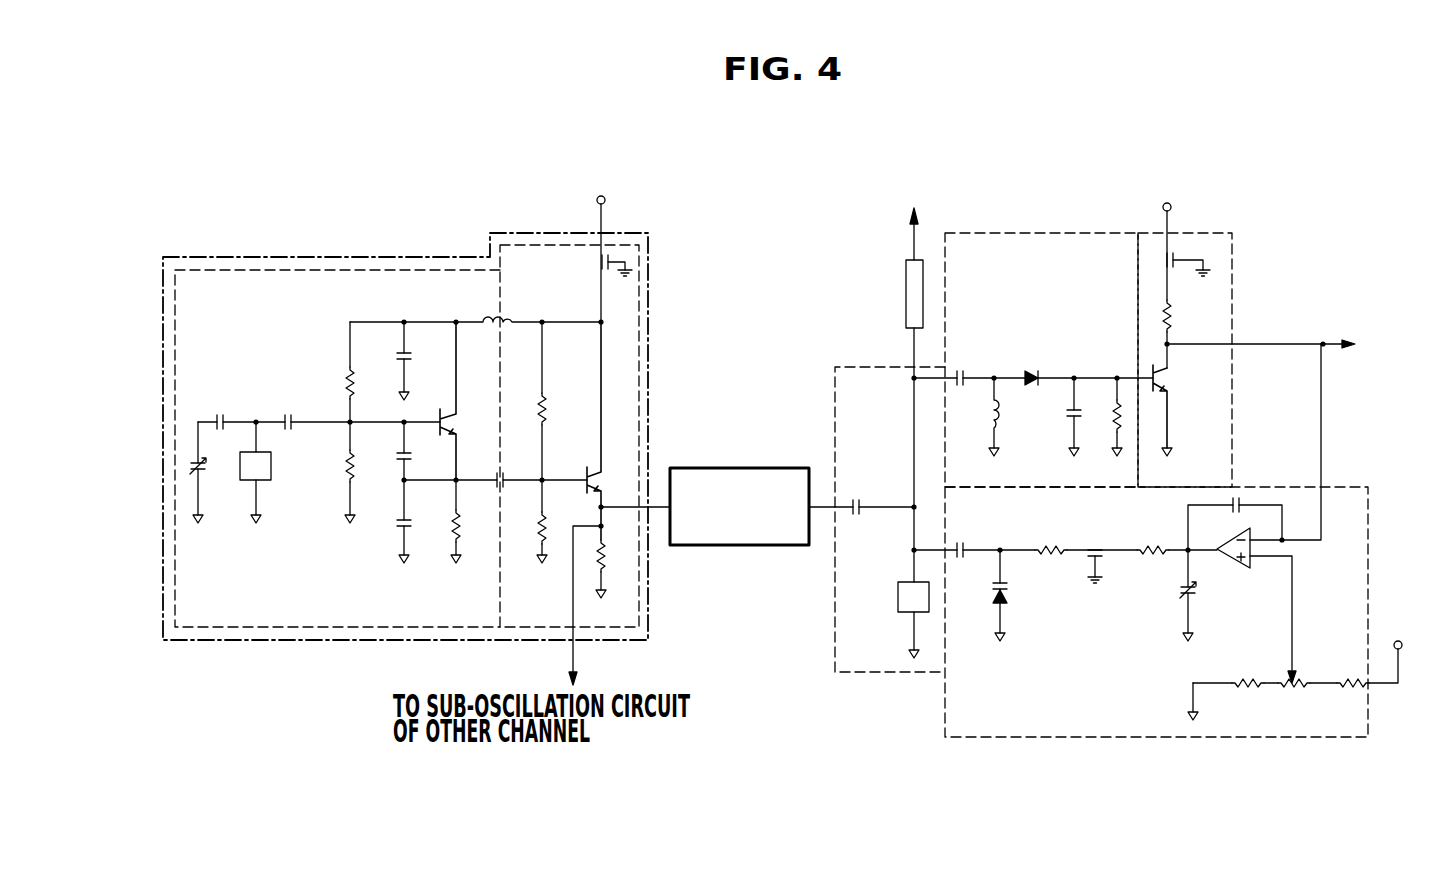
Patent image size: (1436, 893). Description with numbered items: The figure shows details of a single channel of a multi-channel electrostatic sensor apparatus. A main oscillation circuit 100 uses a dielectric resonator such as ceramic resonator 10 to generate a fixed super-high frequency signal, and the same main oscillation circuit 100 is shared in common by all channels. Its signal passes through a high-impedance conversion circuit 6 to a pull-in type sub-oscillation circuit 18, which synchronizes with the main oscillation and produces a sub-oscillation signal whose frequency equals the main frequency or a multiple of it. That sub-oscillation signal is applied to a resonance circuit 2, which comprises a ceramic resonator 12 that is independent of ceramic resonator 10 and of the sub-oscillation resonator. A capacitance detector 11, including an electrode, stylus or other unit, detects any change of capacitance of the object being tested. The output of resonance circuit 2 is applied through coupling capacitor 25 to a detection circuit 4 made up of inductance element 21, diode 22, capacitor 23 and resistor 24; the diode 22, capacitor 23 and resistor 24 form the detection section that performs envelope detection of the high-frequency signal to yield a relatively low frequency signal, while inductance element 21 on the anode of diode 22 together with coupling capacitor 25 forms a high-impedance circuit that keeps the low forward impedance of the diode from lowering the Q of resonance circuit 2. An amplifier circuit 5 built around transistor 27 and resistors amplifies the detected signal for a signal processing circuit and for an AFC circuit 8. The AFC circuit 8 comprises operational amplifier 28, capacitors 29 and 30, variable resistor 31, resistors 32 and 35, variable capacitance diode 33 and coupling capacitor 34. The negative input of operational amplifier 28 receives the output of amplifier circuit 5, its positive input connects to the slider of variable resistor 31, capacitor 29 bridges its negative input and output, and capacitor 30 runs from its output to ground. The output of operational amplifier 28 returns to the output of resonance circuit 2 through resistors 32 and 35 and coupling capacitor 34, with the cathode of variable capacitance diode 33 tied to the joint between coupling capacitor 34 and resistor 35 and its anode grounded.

The main oscillation circuit 100 is at (199, 257).
The high-impedance conversion circuit 6 is at (630, 245).
The ceramic resonator 10 is at (270, 466).
The sub-oscillation circuit 18 is at (770, 468).
The resonance circuit 2 is at (835, 378).
The capacitance detector 11 is at (906, 278).
The ceramic resonator 12 is at (898, 597).
The detection circuit 4 is at (985, 235).
The coupling capacitor 25 is at (955, 372).
The diode 22 is at (1028, 370).
The inductance element 21 is at (992, 410).
The capacitor 23 is at (1068, 412).
The resistor 24 is at (1113, 420).
The amplifier circuit 5 is at (1207, 233).
The transistor 27 is at (1170, 376).
The AFC circuit 8 is at (1032, 737).
The coupling capacitor 34 is at (957, 545).
The resistor 35 is at (1037, 546).
The resistor 32 is at (1140, 546).
The variable capacitance diode 33 is at (1008, 588).
The capacitor 30 is at (1195, 590).
The operational amplifier 28 is at (1233, 566).
The capacitor 29 is at (1236, 512).
The variable resistor 31 is at (1292, 688).